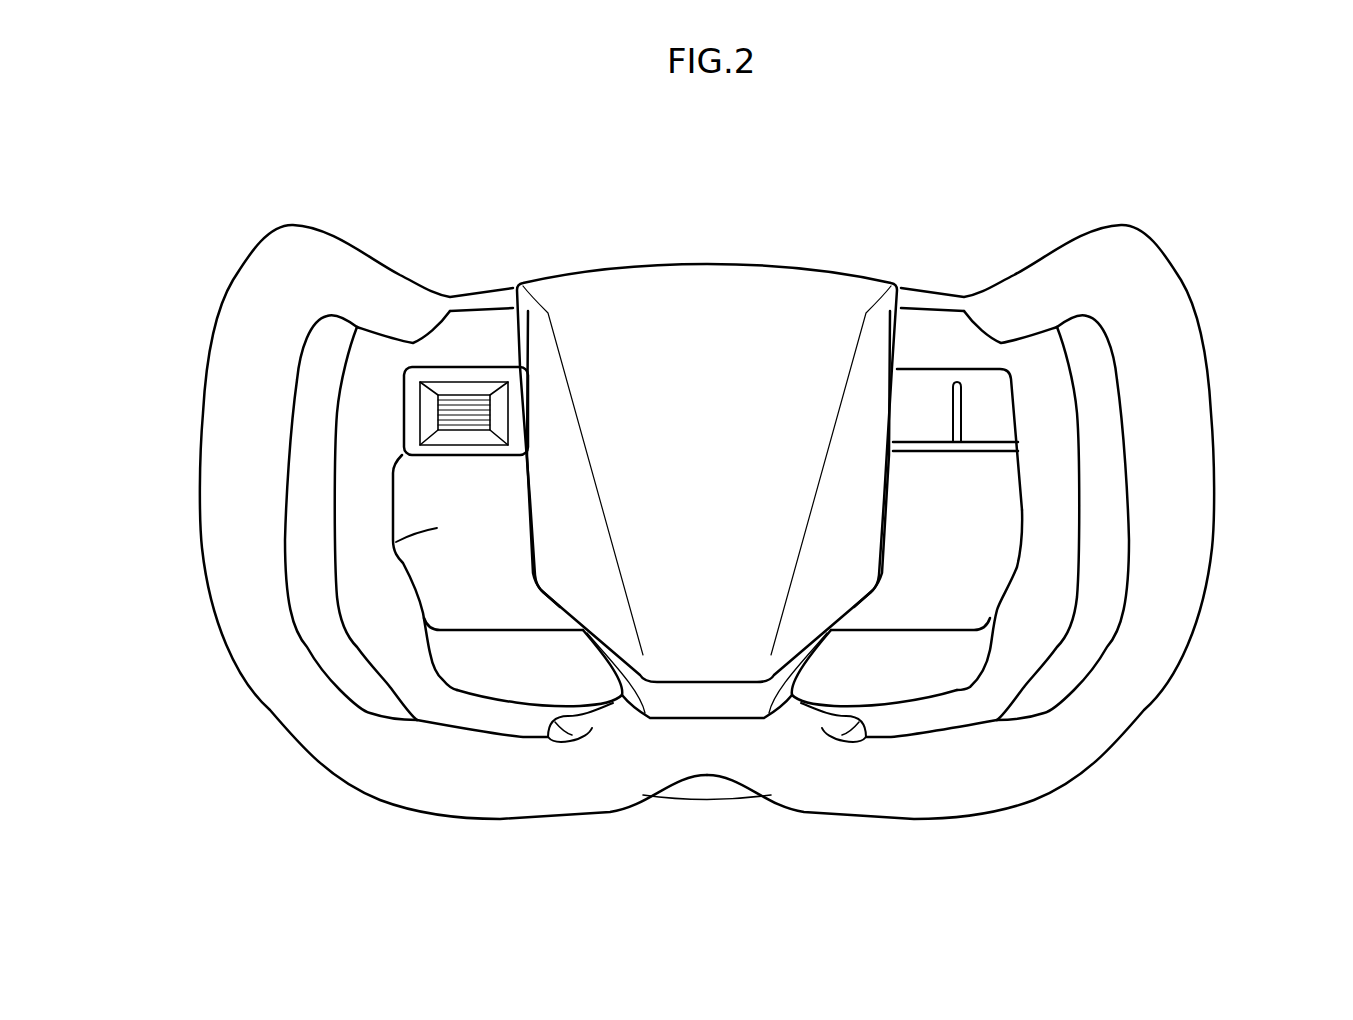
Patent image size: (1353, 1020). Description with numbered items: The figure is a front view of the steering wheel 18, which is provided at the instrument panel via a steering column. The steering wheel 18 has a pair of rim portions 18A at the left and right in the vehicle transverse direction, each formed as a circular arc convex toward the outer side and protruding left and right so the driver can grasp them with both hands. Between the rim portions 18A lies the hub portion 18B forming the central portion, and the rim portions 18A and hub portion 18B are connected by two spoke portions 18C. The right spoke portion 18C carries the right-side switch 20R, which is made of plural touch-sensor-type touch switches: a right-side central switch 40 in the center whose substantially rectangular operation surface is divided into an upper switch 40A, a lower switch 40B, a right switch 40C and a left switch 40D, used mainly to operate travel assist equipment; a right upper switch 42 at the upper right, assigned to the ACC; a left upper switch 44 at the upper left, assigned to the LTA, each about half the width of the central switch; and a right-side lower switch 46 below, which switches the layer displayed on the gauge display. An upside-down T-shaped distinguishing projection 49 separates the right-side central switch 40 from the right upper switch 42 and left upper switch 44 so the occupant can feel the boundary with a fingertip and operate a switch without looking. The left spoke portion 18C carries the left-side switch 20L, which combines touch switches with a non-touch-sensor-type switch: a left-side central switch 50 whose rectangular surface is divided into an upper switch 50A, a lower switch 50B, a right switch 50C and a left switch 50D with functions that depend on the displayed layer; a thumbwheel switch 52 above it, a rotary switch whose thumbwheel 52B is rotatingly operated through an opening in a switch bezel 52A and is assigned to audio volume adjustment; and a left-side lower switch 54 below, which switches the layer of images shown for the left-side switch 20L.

The steering wheel 18 is at (513, 185).
The rim portions 18A is at (213, 333).
The hub portion 18B is at (708, 263).
The spoke portions 18C is at (475, 290).
The left-side switch 20L is at (322, 630).
The right-side switch 20R is at (1108, 599).
The right-side central switch 40 is at (1030, 477).
The upper switch 40A is at (953, 467).
The lower switch 40B is at (950, 537).
The right switch 40C is at (987, 502).
The left switch 40D is at (905, 500).
The right upper switch 42 is at (997, 410).
The left upper switch 44 is at (900, 416).
The right-side lower switch 46 is at (865, 675).
The distinguishing projection 49 is at (963, 403).
The left-side central switch 50 is at (382, 512).
The upper switch 50A is at (453, 483).
The lower switch 50B is at (477, 543).
The right switch 50C is at (510, 518).
The left switch 50D is at (397, 542).
The thumbwheel switch 52 is at (421, 360).
The switch bezel 52A is at (407, 420).
The thumbwheel 52B is at (470, 395).
The left-side lower switch 54 is at (520, 690).